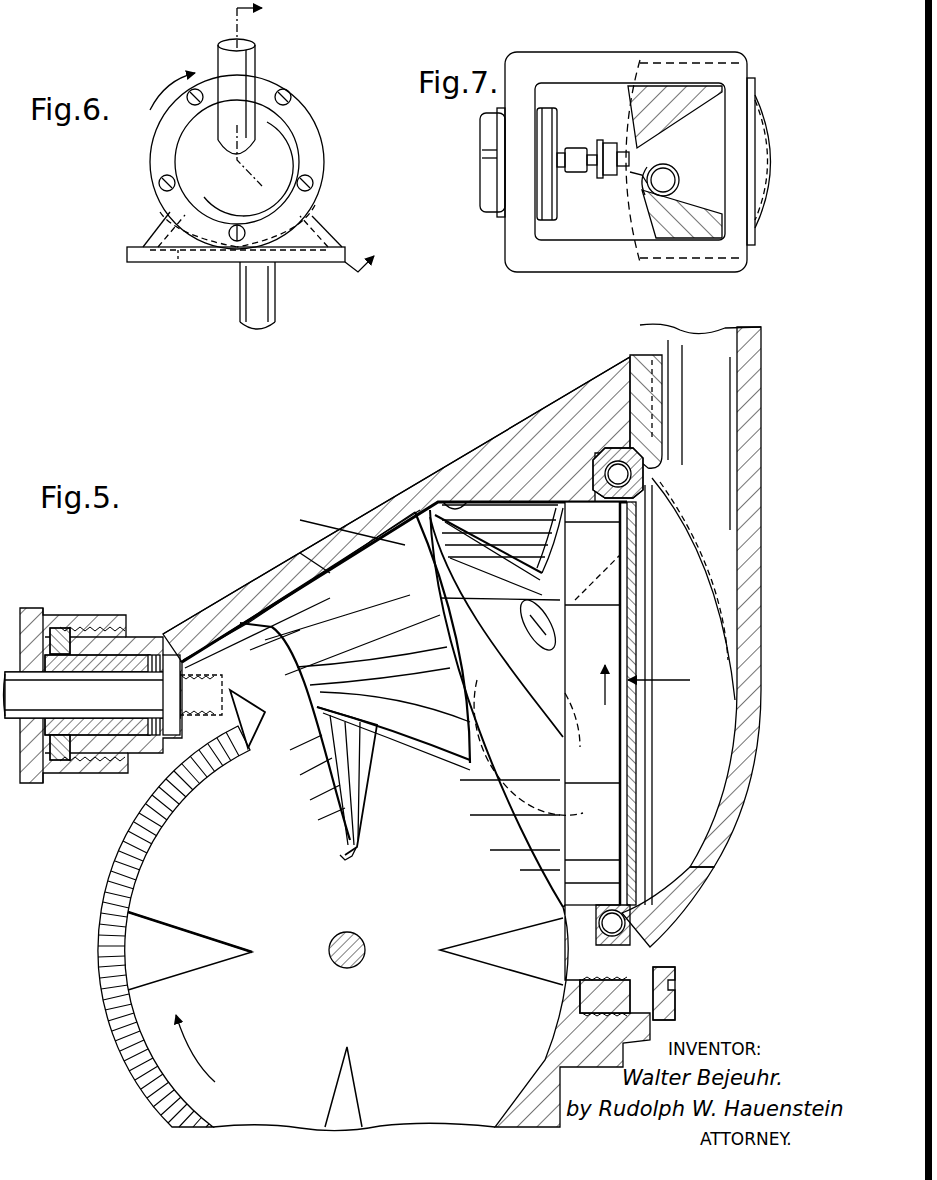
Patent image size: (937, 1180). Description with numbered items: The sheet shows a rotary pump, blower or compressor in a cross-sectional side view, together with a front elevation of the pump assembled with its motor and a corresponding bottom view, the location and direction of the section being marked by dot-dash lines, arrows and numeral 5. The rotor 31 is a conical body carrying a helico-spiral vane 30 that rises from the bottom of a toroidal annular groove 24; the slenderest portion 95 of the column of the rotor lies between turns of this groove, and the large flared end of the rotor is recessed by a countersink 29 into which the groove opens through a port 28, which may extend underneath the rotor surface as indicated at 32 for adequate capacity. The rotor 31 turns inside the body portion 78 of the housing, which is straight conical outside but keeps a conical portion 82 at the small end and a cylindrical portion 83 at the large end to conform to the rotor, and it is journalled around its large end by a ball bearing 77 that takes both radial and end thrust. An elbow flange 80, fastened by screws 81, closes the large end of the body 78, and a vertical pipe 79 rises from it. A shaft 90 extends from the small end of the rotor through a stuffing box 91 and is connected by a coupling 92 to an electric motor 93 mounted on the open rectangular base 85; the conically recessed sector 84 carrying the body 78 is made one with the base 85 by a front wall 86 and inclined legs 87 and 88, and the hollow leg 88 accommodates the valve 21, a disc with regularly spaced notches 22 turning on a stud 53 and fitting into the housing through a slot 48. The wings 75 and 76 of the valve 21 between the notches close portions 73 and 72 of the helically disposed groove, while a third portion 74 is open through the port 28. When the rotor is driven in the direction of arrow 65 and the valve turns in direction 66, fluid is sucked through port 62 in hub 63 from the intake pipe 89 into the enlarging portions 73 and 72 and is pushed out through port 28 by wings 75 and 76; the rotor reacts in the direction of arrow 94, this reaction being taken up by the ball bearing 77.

In FIG. 6, the section indicator 5 is at (313, 137).
In FIG. 5, the valve 21 is at (395, 888).
In FIG. 5, the notches 22 is at (182, 930).
In FIG. 5, the toroidal annular groove 24 is at (352, 668).
In FIG. 5, the port 28 is at (545, 680).
In FIG. 5, the countersink 29 is at (658, 804).
In FIG. 5, the vane 30 is at (326, 676).
In FIG. 5, the rotor 31 is at (541, 696).
In FIG. 5, the port extension 32 is at (580, 770).
In FIG. 5, the slot 48 is at (501, 951).
In FIG. 5, the stud 53 is at (328, 953).
In FIG. 7, the port 62 is at (664, 192).
In FIG. 7, the hub 63 is at (681, 178).
In FIG. 6, the direction of rotation of the rotor 65 is at (169, 91).
In FIG. 5, the direction of rotation of the rotor 65 is at (604, 675).
In FIG. 5, the direction of rotation of the valve 66 is at (195, 1048).
In FIG. 5, the lower portion of helically disposed groove 72 is at (330, 605).
In FIG. 5, the upper portion of helically disposed groove 73 is at (93, 695).
In FIG. 5, the third portion of helically disposed groove 74 is at (507, 520).
In FIG. 5, the wing 75 is at (296, 928).
In FIG. 5, the wing 76 is at (552, 977).
In FIG. 5, the ball bearing 77 is at (648, 476).
In FIG. 5, the body portion of housing 78 is at (385, 503).
In FIG. 6, the vertical pipe 79 is at (236, 96).
In FIG. 7, the vertical pipe 79 is at (770, 152).
In FIG. 5, the vertical pipe 79 is at (700, 595).
In FIG. 6, the elbow flange 80 is at (237, 162).
In FIG. 7, the elbow flange 80 is at (761, 214).
In FIG. 5, the elbow flange 80 is at (705, 866).
In FIG. 6, the screws 81 is at (288, 96).
In FIG. 5, the screws 81 is at (676, 974).
In FIG. 5, the conical portion 82 is at (352, 558).
In FIG. 5, the cylindrical portion 83 is at (445, 500).
In FIG. 6, the conically recessed sector 84 is at (160, 212).
In FIG. 7, the conically recessed sector 84 is at (684, 161).
In FIG. 6, the open rectangular base 85 is at (136, 257).
In FIG. 7, the open rectangular base 85 is at (626, 162).
In FIG. 6, the front wall 86 is at (180, 252).
In FIG. 6, the inclined leg 87 is at (150, 241).
In FIG. 7, the inclined leg 87 is at (627, 115).
In FIG. 6, the inclined leg 88 is at (326, 229).
In FIG. 7, the inclined leg 88 is at (632, 222).
In FIG. 5, the inclined leg 88 is at (155, 1135).
In FIG. 6, the intake pipe 89 is at (262, 328).
In FIG. 7, the intake pipe 89 is at (652, 172).
In FIG. 5, the shaft 90 is at (113, 695).
In FIG. 5, the stuffing box 91 is at (88, 765).
In FIG. 7, the coupling 92 is at (578, 150).
In FIG. 7, the electric motor 93 is at (482, 178).
In FIG. 5, the direction of rotor reaction 94 is at (670, 681).
In FIG. 5, the slenderest portion of rotor column 95 is at (395, 703).